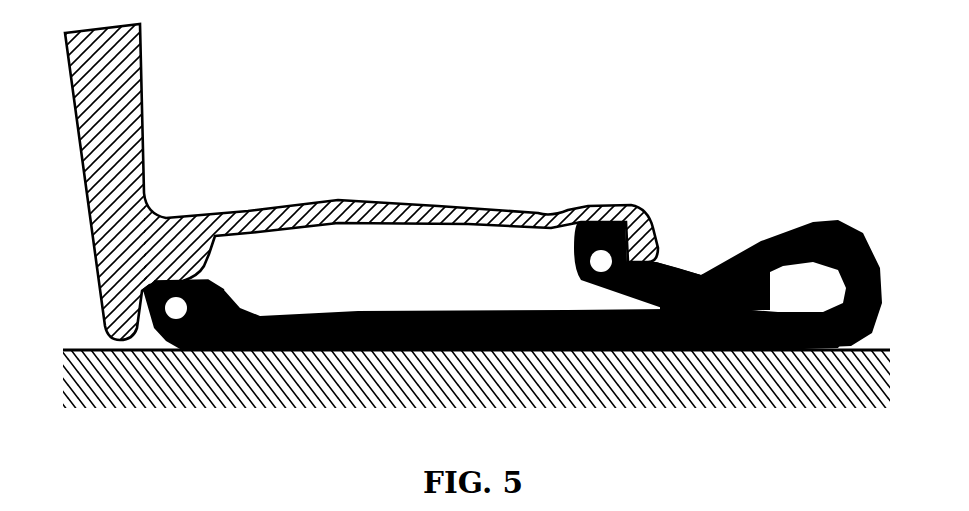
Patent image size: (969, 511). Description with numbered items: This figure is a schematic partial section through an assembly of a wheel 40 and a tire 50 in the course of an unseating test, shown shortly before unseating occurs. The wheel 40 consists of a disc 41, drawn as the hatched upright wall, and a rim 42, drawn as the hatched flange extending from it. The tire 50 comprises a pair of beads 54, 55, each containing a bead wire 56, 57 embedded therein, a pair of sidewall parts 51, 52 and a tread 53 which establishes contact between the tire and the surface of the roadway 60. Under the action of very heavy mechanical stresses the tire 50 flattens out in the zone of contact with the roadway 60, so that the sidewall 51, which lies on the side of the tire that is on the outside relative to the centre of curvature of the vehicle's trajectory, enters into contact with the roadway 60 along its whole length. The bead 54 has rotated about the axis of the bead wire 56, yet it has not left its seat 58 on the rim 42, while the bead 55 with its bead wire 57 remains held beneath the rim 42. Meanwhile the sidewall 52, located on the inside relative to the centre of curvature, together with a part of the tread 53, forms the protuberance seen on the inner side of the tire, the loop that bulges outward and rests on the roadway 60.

The wheel 40 is at (361, 182).
The disc 41 is at (113, 98).
The rim 42 is at (321, 192).
The tire 50 is at (512, 214).
The sidewall part 51 is at (383, 338).
The sidewall part 52 is at (750, 281).
The tread 53 is at (696, 335).
The bead 54 is at (143, 281).
The bead 55 is at (595, 233).
The bead wire 56 is at (180, 300).
The bead wire 57 is at (592, 254).
The seat 58 is at (148, 262).
The roadway 60 is at (478, 385).